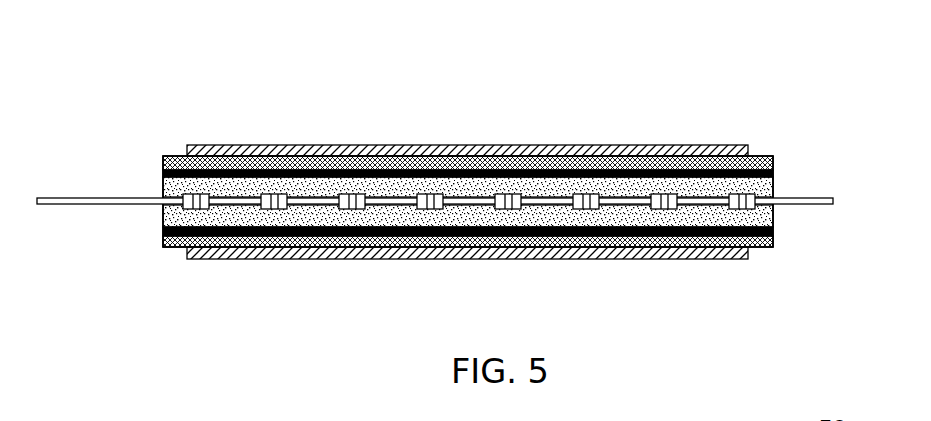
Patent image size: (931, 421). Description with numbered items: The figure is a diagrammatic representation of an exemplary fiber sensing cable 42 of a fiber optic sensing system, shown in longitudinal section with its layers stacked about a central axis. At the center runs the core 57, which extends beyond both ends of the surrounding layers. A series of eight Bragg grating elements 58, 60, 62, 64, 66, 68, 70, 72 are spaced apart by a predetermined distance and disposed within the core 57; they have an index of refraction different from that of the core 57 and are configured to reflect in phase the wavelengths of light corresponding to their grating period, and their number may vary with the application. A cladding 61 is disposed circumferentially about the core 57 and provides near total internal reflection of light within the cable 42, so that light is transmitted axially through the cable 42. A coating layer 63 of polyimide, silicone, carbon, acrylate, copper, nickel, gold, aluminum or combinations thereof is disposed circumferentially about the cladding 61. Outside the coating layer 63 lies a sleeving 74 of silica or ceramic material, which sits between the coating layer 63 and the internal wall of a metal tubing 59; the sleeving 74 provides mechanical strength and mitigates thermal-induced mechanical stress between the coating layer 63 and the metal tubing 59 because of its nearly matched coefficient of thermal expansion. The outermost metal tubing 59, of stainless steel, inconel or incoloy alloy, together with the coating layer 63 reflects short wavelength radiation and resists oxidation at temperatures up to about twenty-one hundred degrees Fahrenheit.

The fiber sensing cable 42 is at (733, 52).
The core 57 is at (817, 199).
The Bragg grating element 58 is at (206, 237).
The metal tubing 59 is at (233, 145).
The Bragg grating element 60 is at (286, 237).
The cladding 61 is at (162, 216).
The Bragg grating element 62 is at (366, 240).
The coating layer 63 is at (162, 172).
The Bragg grating element 64 is at (442, 238).
The Bragg grating element 66 is at (513, 237).
The Bragg grating element 68 is at (595, 237).
The Bragg grating element 70 is at (670, 236).
The Bragg grating element 72 is at (750, 246).
The sleeving 74 is at (173, 155).